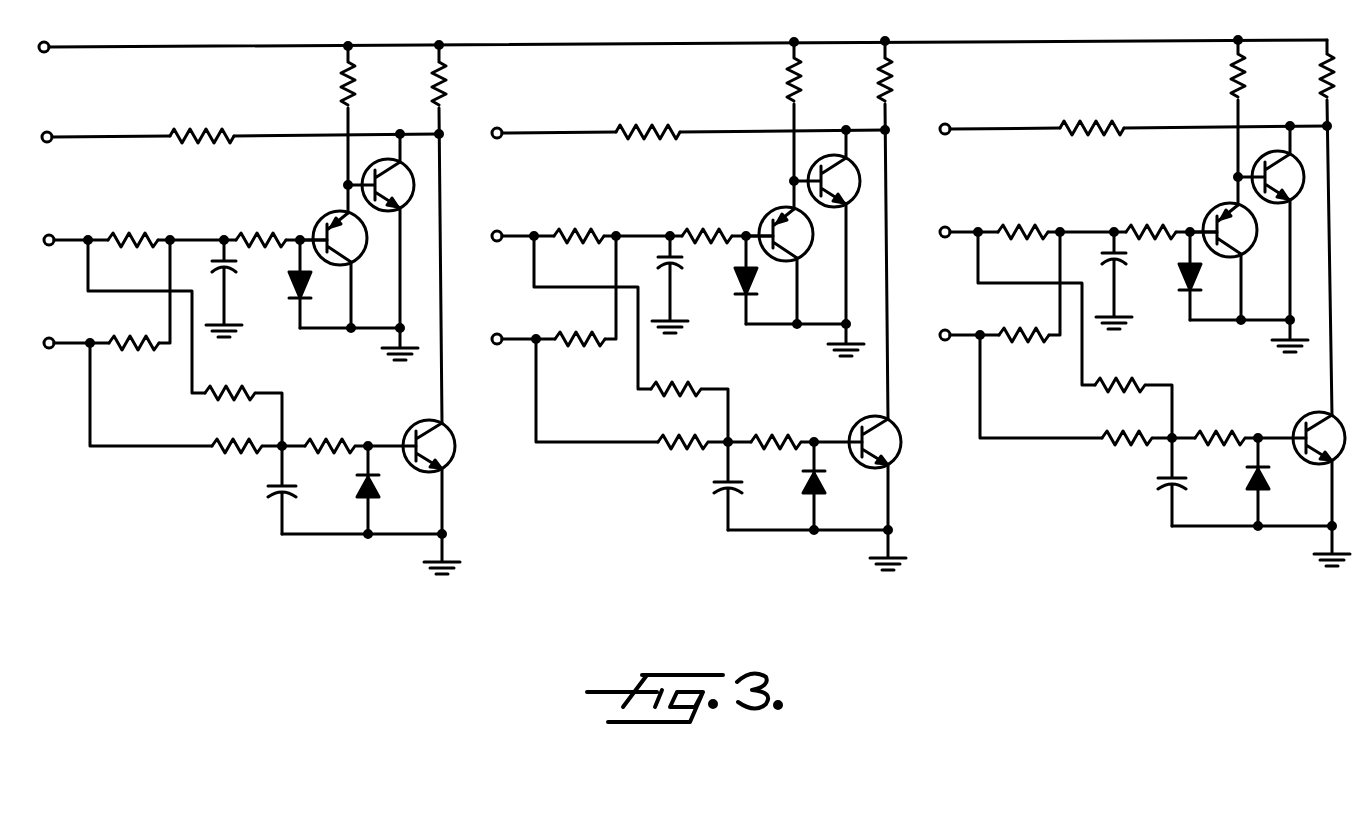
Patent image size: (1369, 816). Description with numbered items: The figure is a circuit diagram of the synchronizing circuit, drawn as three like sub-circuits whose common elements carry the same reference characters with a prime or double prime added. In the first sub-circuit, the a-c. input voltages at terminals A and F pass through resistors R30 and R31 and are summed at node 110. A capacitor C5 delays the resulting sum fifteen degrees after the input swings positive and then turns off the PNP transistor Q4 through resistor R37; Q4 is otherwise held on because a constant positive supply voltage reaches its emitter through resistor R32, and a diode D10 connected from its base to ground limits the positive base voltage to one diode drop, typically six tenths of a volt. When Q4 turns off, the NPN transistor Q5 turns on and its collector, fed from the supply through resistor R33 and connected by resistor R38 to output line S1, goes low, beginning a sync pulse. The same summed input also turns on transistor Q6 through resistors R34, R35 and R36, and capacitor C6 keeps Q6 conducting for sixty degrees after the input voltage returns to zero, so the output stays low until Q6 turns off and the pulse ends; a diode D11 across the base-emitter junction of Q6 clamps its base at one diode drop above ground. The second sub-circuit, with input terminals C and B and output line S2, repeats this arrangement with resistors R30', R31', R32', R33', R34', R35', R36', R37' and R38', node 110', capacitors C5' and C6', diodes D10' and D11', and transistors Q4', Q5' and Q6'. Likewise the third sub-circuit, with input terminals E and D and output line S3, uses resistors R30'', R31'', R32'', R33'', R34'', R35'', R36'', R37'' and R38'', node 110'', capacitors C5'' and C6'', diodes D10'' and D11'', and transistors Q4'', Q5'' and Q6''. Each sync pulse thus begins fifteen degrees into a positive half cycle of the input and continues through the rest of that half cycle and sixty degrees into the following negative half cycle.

The output line S1 is at (230, 151).
The strobe input terminal S2 is at (677, 147).
The strobe input terminal S3 is at (1122, 143).
The terminal A is at (176, 314).
The input terminal B is at (568, 388).
The input terminal C is at (624, 310).
The input terminal D is at (1014, 384).
The input terminal E is at (1071, 306).
The terminal F is at (122, 392).
The node 110 is at (181, 261).
The node 110' is at (629, 257).
The node 110'' is at (1076, 253).
The resistor R30 is at (126, 217).
The resistor R31 is at (139, 366).
The resistor R32 is at (313, 128).
The resistor R33 is at (478, 233).
The resistor R34 is at (252, 401).
The resistor R35 is at (237, 463).
The resistor R36 is at (358, 427).
The resistor R37 is at (250, 217).
The resistor R38 is at (188, 118).
The resistor R30' is at (571, 213).
The resistor R31' is at (587, 362).
The resistor R32' is at (745, 124).
The resistor R33' is at (925, 229).
The resistor R34' is at (702, 397).
The resistor R35' is at (681, 459).
The resistor R36' is at (804, 423).
The resistor R37' is at (695, 213).
The resistor R38' is at (632, 114).
The resistor R30'' is at (1015, 209).
The resistor R31'' is at (1032, 358).
The resistor R32'' is at (1186, 121).
The resistor R33'' is at (1294, 227).
The resistor R34'' is at (1149, 393).
The resistor R35'' is at (1125, 455).
The resistor R36'' is at (1247, 419).
The resistor R37'' is at (1138, 209).
The resistor R38'' is at (1075, 110).
The capacitor C5 is at (246, 288).
The capacitor C6 is at (248, 491).
The capacitor C5' is at (694, 284).
The capacitor C6' is at (693, 487).
The capacitor C5'' is at (1140, 280).
The capacitor C6'' is at (1140, 483).
The diode D10 is at (276, 284).
The diode D11 is at (399, 490).
The diode D10' is at (721, 280).
The diode D11' is at (847, 486).
The diode D10'' is at (1164, 276).
The diode D11'' is at (1293, 482).
The PNP transistor Q4 is at (326, 257).
The NPN transistor Q5 is at (352, 231).
The transistor Q6 is at (454, 477).
The PNP transistor Q4' is at (772, 253).
The NPN transistor Q5' is at (798, 227).
The transistor Q6' is at (903, 473).
The PNP transistor Q4'' is at (1208, 249).
The NPN transistor Q5'' is at (1236, 223).
The transistor Q6'' is at (1301, 448).